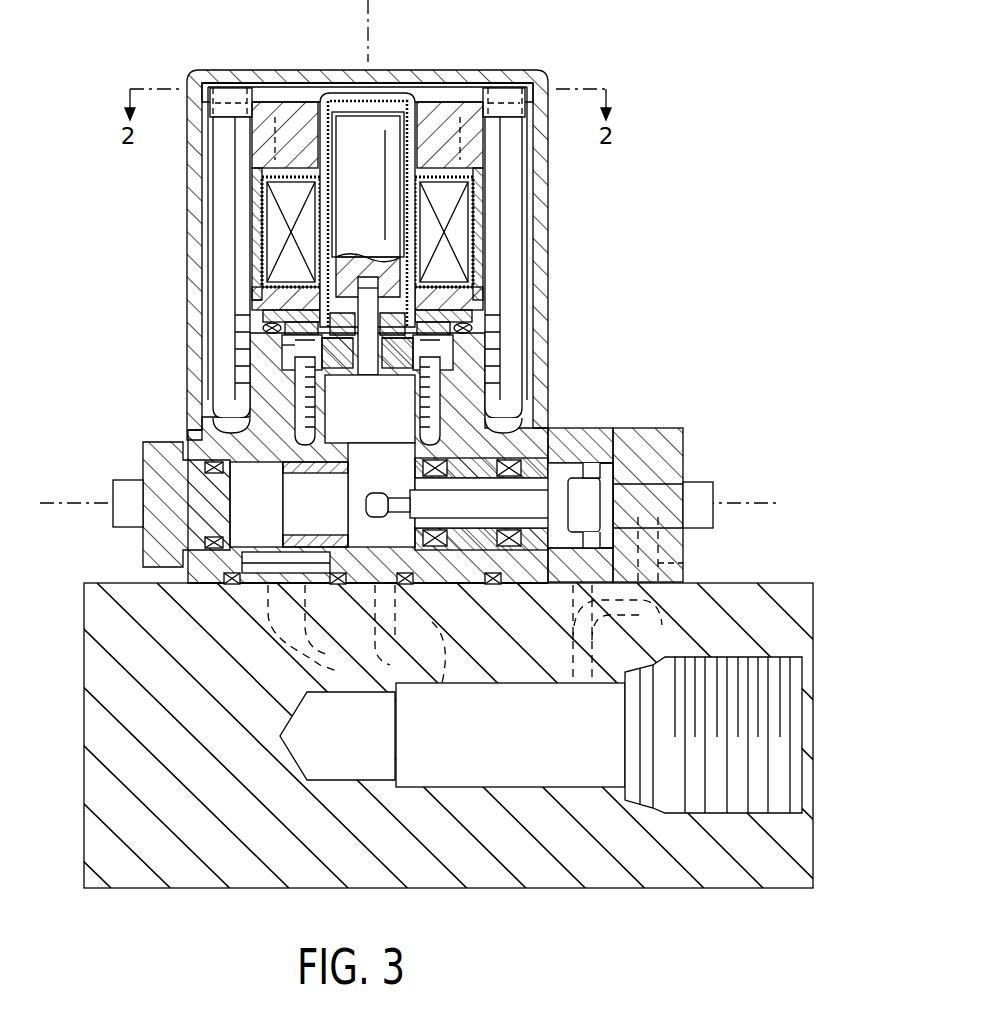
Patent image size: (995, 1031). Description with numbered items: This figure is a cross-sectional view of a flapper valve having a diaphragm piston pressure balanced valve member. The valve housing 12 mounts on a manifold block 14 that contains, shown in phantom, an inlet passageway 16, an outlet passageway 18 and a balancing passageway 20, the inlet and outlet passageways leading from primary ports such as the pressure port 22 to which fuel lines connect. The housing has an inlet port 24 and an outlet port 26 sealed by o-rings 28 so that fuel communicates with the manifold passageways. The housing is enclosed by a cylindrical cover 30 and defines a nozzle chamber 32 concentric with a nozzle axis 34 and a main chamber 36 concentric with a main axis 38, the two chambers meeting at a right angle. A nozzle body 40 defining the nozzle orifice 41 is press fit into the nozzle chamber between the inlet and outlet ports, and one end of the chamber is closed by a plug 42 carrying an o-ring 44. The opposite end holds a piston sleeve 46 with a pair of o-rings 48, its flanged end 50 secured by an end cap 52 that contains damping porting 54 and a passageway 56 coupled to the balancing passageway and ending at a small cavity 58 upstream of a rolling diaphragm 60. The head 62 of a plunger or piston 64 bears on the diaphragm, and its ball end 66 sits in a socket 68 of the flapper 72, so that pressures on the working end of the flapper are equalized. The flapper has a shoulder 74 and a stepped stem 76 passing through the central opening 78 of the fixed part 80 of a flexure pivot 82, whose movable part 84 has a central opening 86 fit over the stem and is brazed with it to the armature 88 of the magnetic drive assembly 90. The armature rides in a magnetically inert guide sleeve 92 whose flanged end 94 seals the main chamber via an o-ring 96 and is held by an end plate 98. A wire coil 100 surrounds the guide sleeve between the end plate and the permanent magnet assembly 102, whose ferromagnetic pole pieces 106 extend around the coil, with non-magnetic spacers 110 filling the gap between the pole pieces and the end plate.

The valve housing 12 is at (225, 455).
The manifold block 14 is at (785, 598).
The inlet passageway 16 is at (262, 623).
The outlet passageway 18 is at (510, 735).
The balancing passageway 20 is at (664, 626).
The pressure port 22 is at (800, 730).
The inlet port 24 is at (260, 585).
The outlet port 26 is at (410, 634).
The o-rings 28 is at (337, 585).
The cylindrical cover 30 is at (515, 375).
The nozzle chamber 32 is at (256, 504).
The nozzle axis 34 is at (778, 501).
The main chamber 36 is at (240, 440).
The main axis 38 is at (372, 640).
The nozzle body 40 is at (340, 472).
The nozzle orifice 41 is at (345, 508).
The plug 42 is at (153, 540).
The o-ring 44 is at (210, 472).
The piston sleeve 46 is at (548, 450).
The o-rings 48 is at (405, 462).
The flanged end 50 is at (575, 440).
The end cap 52 is at (672, 430).
The damping porting 54 is at (662, 480).
The passageway 56 is at (683, 563).
The cavity 58 is at (603, 505).
The rolling diaphragm 60 is at (640, 440).
The head 62 is at (665, 497).
The plunger or piston 64 is at (560, 585).
The ball end 66 is at (375, 492).
The socket 68 is at (408, 585).
The flapper 72 is at (297, 400).
The shoulder 74 is at (370, 409).
The stem 76 is at (370, 340).
The central opening 78 is at (282, 357).
The fixed part 80 is at (480, 387).
The flexure pivot 82 is at (290, 375).
The movable part 84 is at (475, 340).
The central opening 86 is at (490, 295).
The armature 88 is at (368, 184).
The magnetic drive assembly 90 is at (280, 88).
The guide sleeve 92 is at (375, 92).
The flanged end 94 is at (262, 334).
The o-ring 96 is at (485, 316).
The end plate 98 is at (252, 304).
The wire coil 100 is at (460, 225).
The permanent magnet assembly 102 is at (432, 98).
The pole pieces 106 is at (258, 150).
The non-magnetic spacers 110 is at (535, 268).